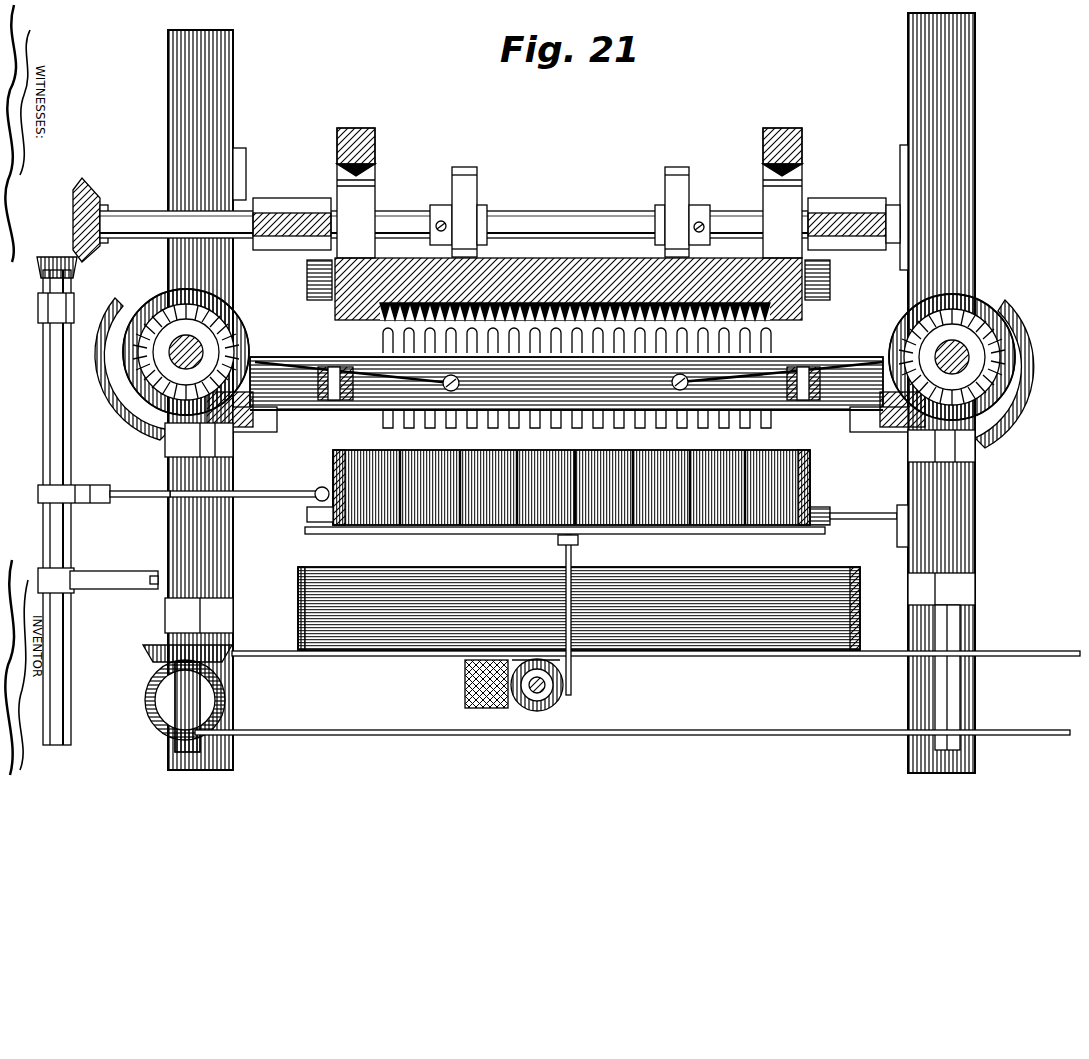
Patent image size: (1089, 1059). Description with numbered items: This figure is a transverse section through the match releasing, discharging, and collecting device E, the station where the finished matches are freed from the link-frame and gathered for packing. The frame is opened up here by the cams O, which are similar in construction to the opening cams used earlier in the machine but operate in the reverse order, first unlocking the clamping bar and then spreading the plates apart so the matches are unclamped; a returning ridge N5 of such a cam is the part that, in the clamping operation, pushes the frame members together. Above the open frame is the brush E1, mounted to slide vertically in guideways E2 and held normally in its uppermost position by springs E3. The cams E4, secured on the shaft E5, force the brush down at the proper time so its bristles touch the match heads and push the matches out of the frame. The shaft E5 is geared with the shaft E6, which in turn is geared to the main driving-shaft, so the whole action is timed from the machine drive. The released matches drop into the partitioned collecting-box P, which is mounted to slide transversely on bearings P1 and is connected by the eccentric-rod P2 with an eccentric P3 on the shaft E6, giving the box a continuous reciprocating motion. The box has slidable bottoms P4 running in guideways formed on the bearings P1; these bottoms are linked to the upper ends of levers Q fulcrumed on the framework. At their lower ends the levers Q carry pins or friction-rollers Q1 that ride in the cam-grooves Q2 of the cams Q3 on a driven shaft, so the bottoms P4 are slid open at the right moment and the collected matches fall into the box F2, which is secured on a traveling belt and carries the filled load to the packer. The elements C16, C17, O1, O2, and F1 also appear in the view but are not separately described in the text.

The match releasing, discharging, and collecting device E is at (576, 207).
The brush E1 is at (796, 320).
The guideways E2 is at (375, 143).
The springs E3 is at (306, 285).
The cams E4 is at (477, 172).
The shaft E5 is at (582, 195).
The shaft E6 is at (52, 397).
The returning ridge N5 is at (305, 363).
The bar C16 is at (368, 404).
The block C17 is at (326, 402).
The cams O is at (1020, 318).
The gear wheel O1 is at (170, 358).
The post bearing O2 is at (176, 538).
The collecting-box P is at (806, 480).
The bearings P1 is at (826, 514).
The eccentric-rod P2 is at (282, 483).
The eccentric P3 is at (90, 496).
The slidable bottoms P4 is at (686, 534).
The levers Q is at (574, 677).
The pins or friction-rollers Q1 is at (575, 692).
The cam-grooves Q2 is at (562, 700).
The cams Q3 is at (530, 692).
The rod F1 is at (888, 662).
The box F2 is at (782, 640).